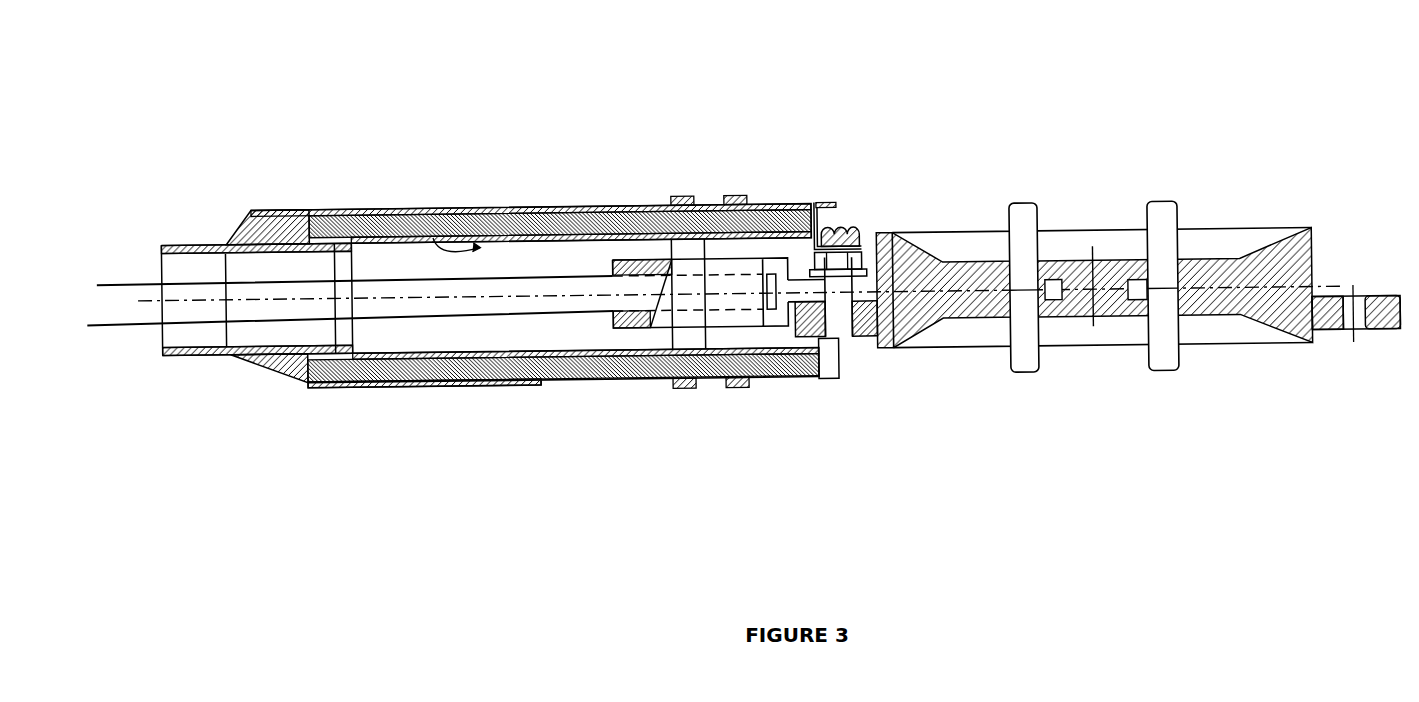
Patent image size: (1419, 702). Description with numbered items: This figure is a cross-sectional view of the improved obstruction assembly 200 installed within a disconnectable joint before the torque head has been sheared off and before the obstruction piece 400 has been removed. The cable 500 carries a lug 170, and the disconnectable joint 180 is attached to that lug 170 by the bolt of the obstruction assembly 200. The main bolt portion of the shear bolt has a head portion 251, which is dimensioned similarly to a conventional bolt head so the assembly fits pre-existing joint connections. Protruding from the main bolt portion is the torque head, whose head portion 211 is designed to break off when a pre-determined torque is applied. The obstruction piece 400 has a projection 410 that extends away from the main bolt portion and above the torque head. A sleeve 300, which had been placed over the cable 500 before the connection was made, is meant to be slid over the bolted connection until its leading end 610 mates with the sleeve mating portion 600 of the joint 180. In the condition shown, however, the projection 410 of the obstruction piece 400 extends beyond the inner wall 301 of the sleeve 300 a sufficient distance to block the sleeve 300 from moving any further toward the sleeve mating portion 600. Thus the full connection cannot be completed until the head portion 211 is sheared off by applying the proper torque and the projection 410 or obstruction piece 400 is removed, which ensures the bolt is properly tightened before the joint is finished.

The lug 170 is at (807, 298).
The disconnectable joint 180 is at (1105, 295).
The obstruction assembly 200 is at (849, 192).
The head portion 211 is at (859, 229).
The head portion 251 is at (840, 264).
The sleeve 300 is at (638, 212).
The inner wall 301 is at (406, 213).
The obstruction piece 400 is at (809, 241).
The projection 410 is at (816, 241).
The cable 500 is at (145, 308).
The sleeve mating portion 600 is at (1026, 236).
The leading end 610 is at (824, 204).